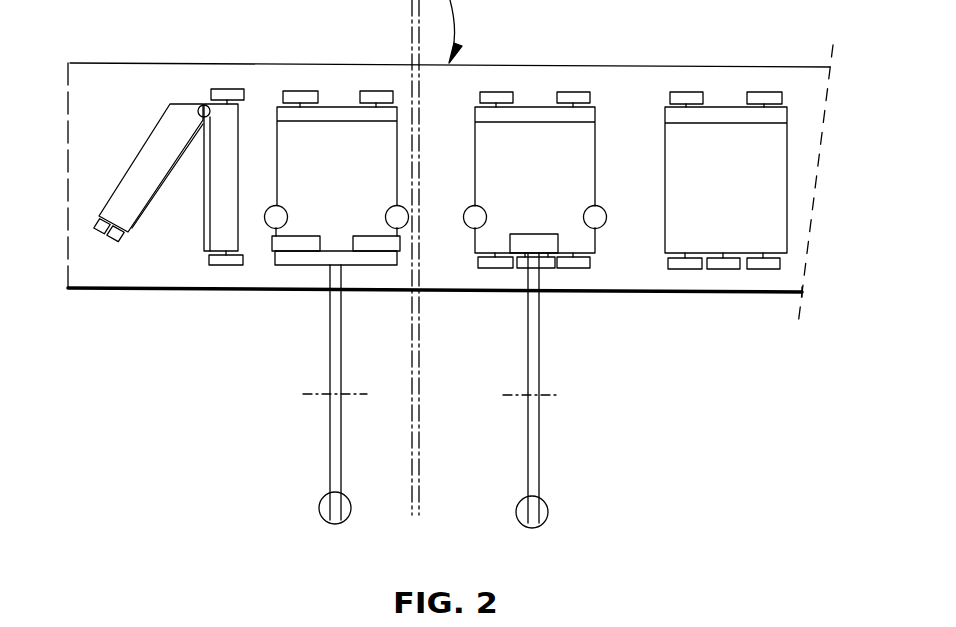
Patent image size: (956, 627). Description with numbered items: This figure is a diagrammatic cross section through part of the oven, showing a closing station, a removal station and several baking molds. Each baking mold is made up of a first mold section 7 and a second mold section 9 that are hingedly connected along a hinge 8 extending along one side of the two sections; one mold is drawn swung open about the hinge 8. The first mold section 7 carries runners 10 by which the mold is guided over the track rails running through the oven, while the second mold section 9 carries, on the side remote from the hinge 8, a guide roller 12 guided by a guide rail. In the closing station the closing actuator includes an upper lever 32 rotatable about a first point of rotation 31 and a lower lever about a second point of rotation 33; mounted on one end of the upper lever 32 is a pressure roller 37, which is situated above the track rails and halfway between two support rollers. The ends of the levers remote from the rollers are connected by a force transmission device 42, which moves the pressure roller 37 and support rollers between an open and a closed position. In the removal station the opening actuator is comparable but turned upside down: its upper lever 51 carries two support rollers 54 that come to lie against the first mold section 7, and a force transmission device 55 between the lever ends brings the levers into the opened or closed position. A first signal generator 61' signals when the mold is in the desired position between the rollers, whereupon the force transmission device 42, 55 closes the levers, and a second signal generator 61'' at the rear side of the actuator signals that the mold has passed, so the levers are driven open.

The first mold section 7 is at (232, 152).
The hinge 8 is at (203, 105).
The second mold section 9 is at (140, 152).
The runners 10 is at (230, 88).
The guide roller 12 is at (545, 269).
The first point of rotation 31 is at (556, 396).
The upper lever 32 is at (540, 433).
The second point of rotation 33 is at (533, 395).
The pressure roller 37 is at (534, 234).
The force transmission device 42 is at (548, 512).
The upper lever 51 is at (330, 426).
The support rollers 54 is at (292, 243).
The force transmission device 55 is at (319, 508).
The first signal generator 61' is at (449, 205).
The second signal generator 61'' is at (426, 201).